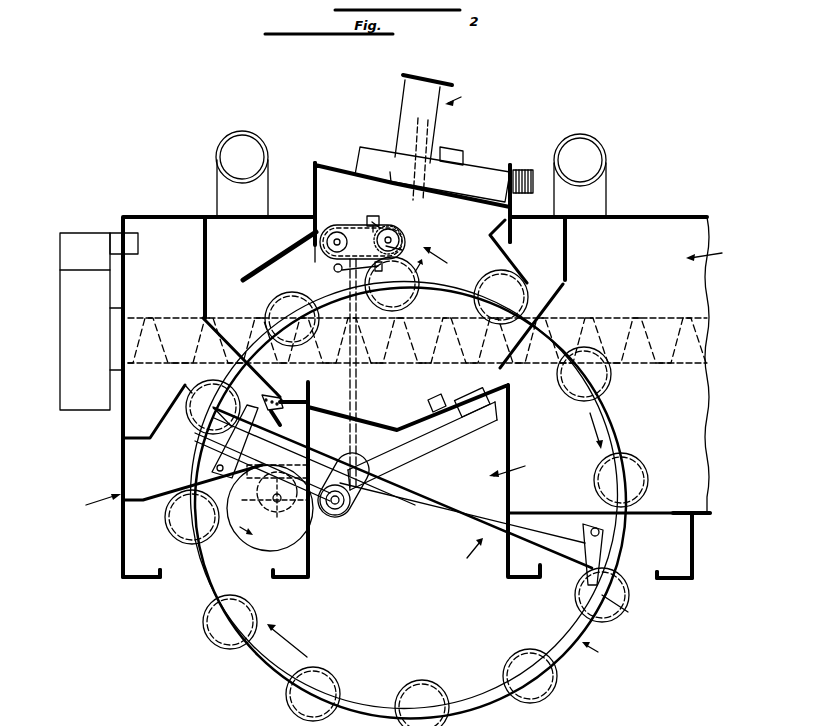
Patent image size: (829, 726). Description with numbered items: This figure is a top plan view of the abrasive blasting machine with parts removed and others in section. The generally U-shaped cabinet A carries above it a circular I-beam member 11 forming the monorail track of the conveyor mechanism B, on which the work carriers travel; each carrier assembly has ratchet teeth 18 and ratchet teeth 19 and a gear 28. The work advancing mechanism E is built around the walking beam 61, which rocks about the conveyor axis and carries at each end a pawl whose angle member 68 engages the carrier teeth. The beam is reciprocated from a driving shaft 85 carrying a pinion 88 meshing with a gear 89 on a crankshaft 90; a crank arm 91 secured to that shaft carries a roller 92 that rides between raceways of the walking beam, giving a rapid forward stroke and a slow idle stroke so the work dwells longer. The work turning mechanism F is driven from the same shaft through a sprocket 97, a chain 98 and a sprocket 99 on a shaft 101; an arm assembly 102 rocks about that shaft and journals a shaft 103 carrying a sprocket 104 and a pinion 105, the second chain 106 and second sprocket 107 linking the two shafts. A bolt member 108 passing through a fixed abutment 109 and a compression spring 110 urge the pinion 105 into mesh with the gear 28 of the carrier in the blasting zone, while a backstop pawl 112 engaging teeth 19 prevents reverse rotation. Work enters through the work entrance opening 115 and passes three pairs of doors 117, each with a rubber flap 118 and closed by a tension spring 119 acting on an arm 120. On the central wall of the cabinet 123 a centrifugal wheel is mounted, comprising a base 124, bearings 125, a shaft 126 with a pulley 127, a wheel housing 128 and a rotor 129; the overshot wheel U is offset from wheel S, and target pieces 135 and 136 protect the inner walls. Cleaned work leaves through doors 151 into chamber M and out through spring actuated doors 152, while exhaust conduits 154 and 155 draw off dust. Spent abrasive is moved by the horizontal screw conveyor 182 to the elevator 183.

The I-beam member 11 is at (273, 676).
The ratchet teeth 18 is at (226, 404).
The ratchet teeth 19 is at (632, 614).
The gear 28 is at (410, 296).
The walking beam 61 is at (433, 515).
The angle member 68 is at (230, 445).
The driving shaft 85 is at (338, 515).
The pinion 88 is at (332, 522).
The gear 89 is at (243, 528).
The crankshaft 90 is at (277, 503).
The crank arm 91 is at (275, 484).
The roller 92 is at (292, 454).
The sprocket 97 is at (356, 511).
The chain 98 is at (357, 383).
The sprocket 99 is at (322, 256).
The shaft 101 is at (322, 240).
The arm assembly 102 is at (377, 215).
The shaft 103 is at (398, 235).
The sprocket 104 is at (403, 249).
The pinion 105 is at (403, 240).
The second chain 106 is at (348, 228).
The second sprocket 107 is at (314, 210).
The bolt member 108 is at (388, 170).
The fixed abutment 109 is at (380, 224).
The compression spring 110 is at (382, 268).
The backstop pawl 112 is at (340, 272).
The work entrance opening 115 is at (161, 580).
The doors 117 is at (217, 325).
The rubber flap 118 is at (276, 392).
The tension spring 119 is at (279, 418).
The arm 120 is at (283, 398).
The central wall of the cabinet 123 is at (474, 420).
The base 124 is at (367, 157).
The bearings 125 is at (368, 466).
The shaft 126 is at (480, 167).
The pulley 127 is at (524, 172).
The wheel housing 128 is at (410, 90).
The rotor 129 is at (428, 126).
The target pieces 135 is at (429, 406).
The target pieces 136 is at (458, 200).
The doors 151 is at (517, 268).
The spring actuated doors 152 is at (654, 513).
The exhaust conduit 154 is at (250, 145).
The exhaust conduit 155 is at (592, 150).
The horizontal screw conveyor 182 is at (580, 322).
The elevator 183 is at (62, 350).
The cabinet A is at (98, 502).
The conveyor mechanism B is at (596, 650).
The work advancing mechanism E is at (470, 554).
The work turning mechanism F is at (441, 261).
The chamber M is at (713, 253).
The wheel S is at (514, 465).
The wheel U is at (460, 98).